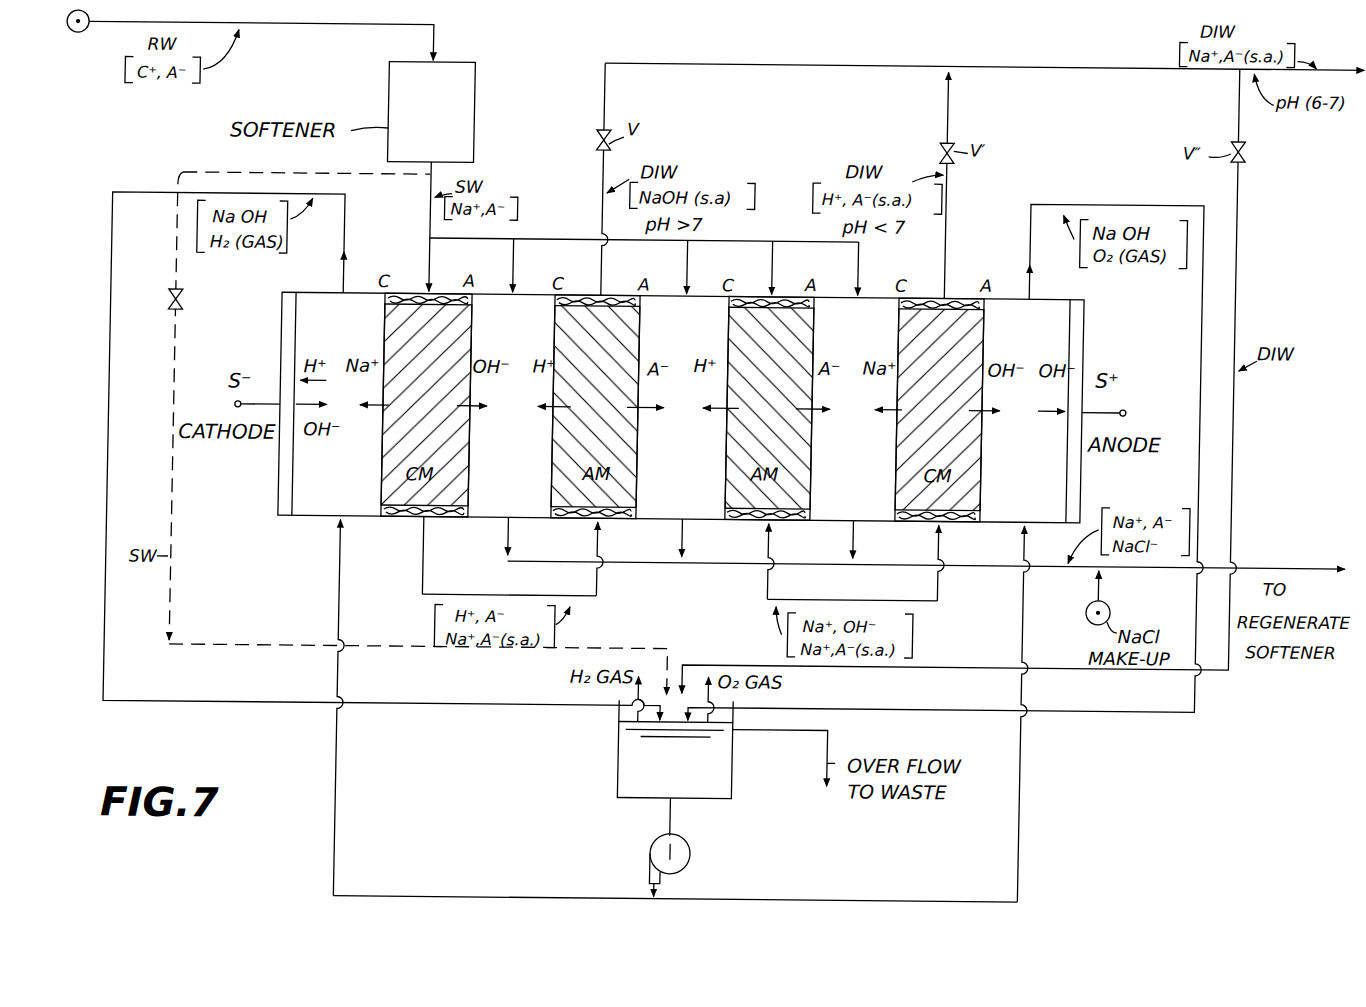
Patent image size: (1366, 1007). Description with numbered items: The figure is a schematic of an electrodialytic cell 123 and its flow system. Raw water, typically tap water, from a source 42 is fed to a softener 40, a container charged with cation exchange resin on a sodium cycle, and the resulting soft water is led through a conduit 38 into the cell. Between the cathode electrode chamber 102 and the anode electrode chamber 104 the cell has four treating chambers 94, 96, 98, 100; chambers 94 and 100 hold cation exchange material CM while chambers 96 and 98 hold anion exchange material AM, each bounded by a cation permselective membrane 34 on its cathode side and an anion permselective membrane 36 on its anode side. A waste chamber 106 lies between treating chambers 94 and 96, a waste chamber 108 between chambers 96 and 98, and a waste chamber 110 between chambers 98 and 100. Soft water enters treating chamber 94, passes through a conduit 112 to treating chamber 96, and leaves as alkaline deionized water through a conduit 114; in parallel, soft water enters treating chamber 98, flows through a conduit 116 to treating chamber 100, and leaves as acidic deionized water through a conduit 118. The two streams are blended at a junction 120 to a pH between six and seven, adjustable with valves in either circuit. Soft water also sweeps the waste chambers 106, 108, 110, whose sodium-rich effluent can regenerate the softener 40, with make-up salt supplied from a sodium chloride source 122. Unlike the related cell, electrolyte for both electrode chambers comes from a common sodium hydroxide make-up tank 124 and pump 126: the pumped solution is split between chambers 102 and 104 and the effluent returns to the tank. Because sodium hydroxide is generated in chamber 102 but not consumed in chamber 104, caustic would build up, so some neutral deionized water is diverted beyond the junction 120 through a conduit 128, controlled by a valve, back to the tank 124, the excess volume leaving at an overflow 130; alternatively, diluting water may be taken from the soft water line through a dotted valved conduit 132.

The source 42 is at (70, 36).
The softener 40 is at (472, 128).
The valved conduit 132 is at (181, 173).
The conduit 38 is at (427, 223).
The conduit 114 is at (602, 98).
The junction 120 is at (946, 66).
The conduit 118 is at (947, 250).
The cation permselective membrane 34 is at (384, 338).
The anion permselective membrane 36 is at (472, 340).
The cell 123 is at (279, 516).
The cathode electrode chamber 102 is at (322, 512).
The treating chamber 94 is at (402, 521).
The waste chamber 106 is at (496, 522).
The treating chamber 96 is at (590, 525).
The waste chamber 108 is at (681, 524).
The treating chamber 98 is at (757, 524).
The waste chamber 110 is at (850, 524).
The treating chamber 100 is at (925, 520).
The anode electrode chamber 104 is at (1015, 518).
The conduit 112 is at (428, 593).
The conduit 116 is at (771, 589).
The source of sodium chloride 122 is at (1092, 605).
The sodium hydroxide make-up tank 124 is at (622, 752).
The pump 126 is at (660, 856).
The conduit 128 is at (1237, 463).
The overflow 130 is at (742, 730).